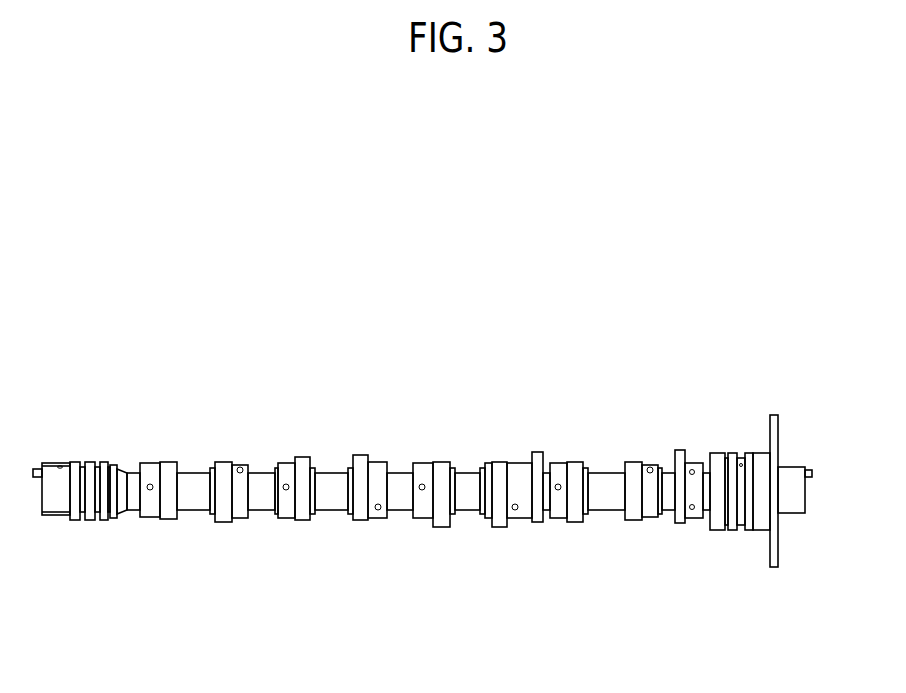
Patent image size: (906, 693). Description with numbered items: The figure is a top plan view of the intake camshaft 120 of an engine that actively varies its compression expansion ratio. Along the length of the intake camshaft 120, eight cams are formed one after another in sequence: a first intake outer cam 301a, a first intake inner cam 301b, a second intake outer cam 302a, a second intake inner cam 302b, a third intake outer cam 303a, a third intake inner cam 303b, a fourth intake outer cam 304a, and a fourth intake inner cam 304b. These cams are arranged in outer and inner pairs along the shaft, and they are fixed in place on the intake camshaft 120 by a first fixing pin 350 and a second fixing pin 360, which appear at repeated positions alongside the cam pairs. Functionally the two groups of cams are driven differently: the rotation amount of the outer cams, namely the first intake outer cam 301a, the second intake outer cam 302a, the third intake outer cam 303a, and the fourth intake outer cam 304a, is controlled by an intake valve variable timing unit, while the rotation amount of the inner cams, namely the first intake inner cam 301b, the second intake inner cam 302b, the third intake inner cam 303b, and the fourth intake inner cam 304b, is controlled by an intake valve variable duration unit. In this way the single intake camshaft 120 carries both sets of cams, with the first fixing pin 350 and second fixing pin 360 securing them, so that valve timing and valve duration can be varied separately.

The intake camshaft 120 is at (443, 365).
The first fixing pin 350 is at (150, 484).
The second fixing pin 360 is at (240, 467).
The first intake outer cam 301a is at (167, 521).
The first intake inner cam 301b is at (222, 523).
The second intake outer cam 302a is at (302, 521).
The second intake inner cam 302b is at (362, 521).
The third intake outer cam 303a is at (440, 528).
The third intake inner cam 303b is at (497, 528).
The fourth intake outer cam 304a is at (575, 523).
The fourth intake inner cam 304b is at (628, 521).